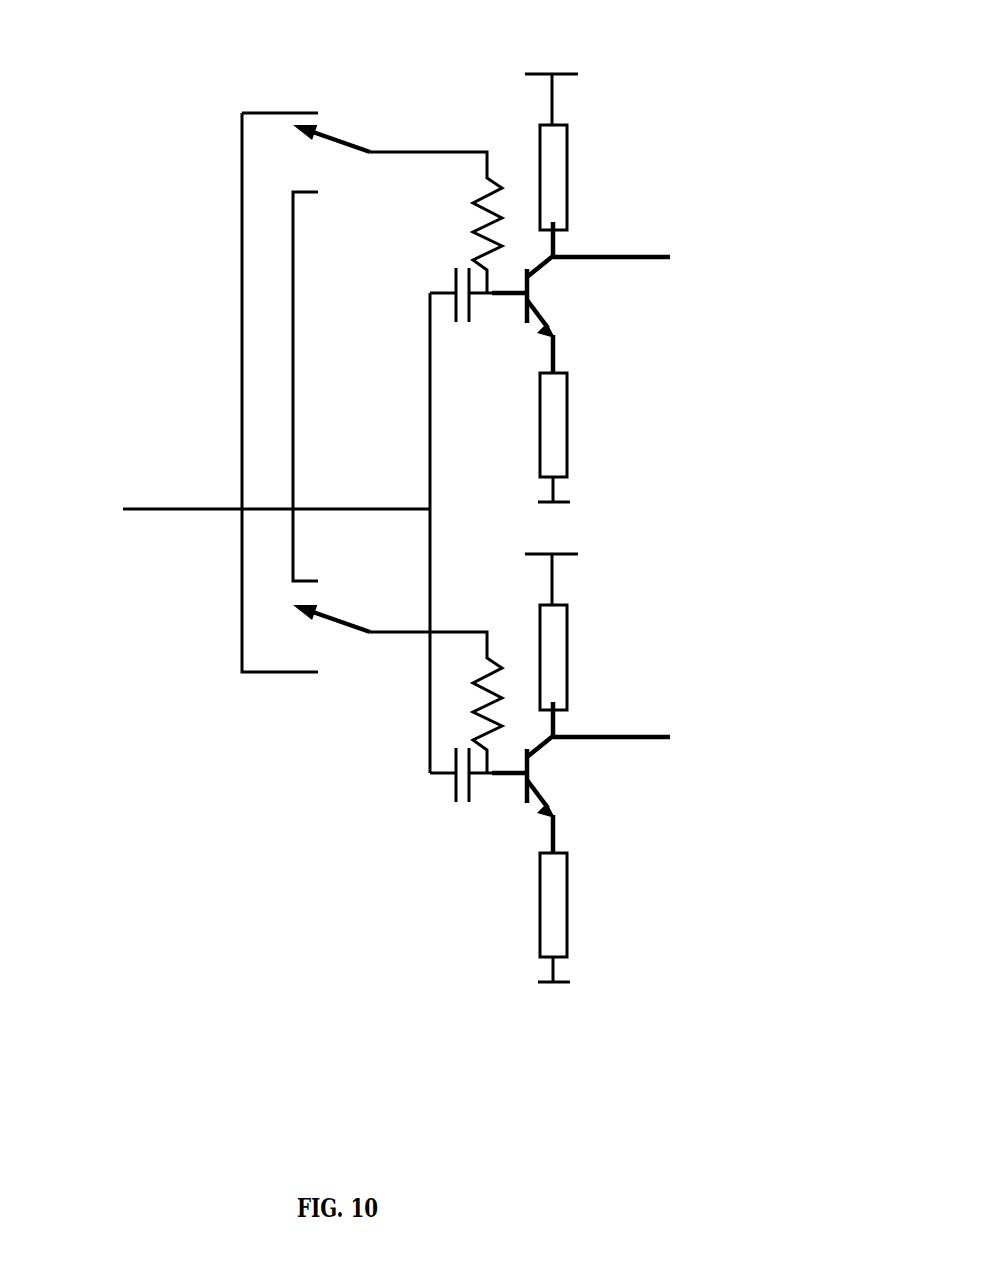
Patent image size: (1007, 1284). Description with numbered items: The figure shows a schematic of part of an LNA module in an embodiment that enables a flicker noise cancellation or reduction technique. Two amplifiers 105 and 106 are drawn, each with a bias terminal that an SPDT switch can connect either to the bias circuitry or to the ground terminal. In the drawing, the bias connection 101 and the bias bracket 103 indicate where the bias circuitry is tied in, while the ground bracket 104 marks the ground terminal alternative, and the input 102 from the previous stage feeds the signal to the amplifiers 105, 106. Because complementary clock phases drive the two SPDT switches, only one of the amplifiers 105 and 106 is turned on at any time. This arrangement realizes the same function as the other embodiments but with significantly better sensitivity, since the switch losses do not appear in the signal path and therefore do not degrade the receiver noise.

The bias line 101 is at (280, 142).
The input from previous stage 102 is at (203, 532).
The bias bracket 103 is at (235, 392).
The ground bracket 104 is at (329, 386).
The amplifier 105 is at (481, 288).
The amplifier 106 is at (481, 768).